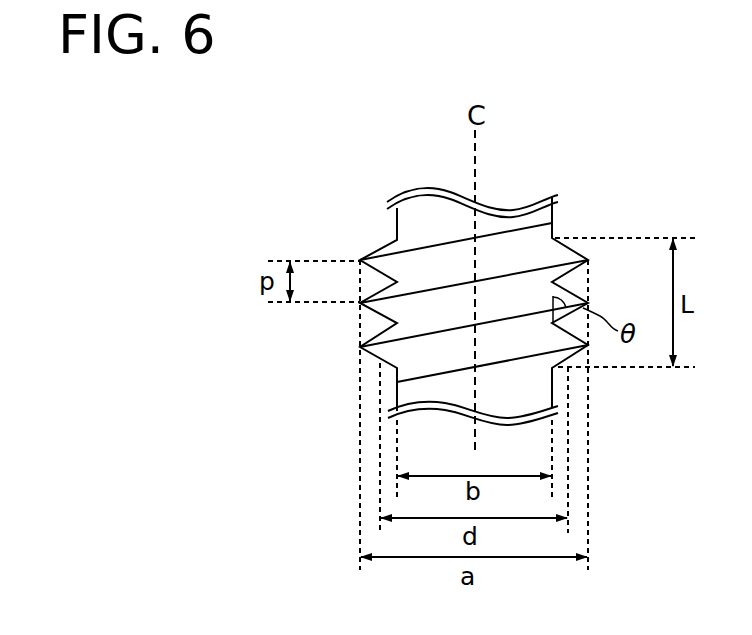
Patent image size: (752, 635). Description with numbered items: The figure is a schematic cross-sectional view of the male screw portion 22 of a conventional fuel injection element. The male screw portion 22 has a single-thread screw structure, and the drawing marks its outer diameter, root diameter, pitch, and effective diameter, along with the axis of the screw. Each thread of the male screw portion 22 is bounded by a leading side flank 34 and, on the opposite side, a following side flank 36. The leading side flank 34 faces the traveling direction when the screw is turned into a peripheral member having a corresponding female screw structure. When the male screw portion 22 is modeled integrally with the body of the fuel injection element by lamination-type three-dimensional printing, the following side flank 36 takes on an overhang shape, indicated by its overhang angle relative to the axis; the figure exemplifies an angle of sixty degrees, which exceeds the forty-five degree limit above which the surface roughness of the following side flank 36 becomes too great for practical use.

The male screw portion 22 is at (612, 150).
The leading side flank 34 is at (567, 247).
The following side flank 36 is at (583, 273).